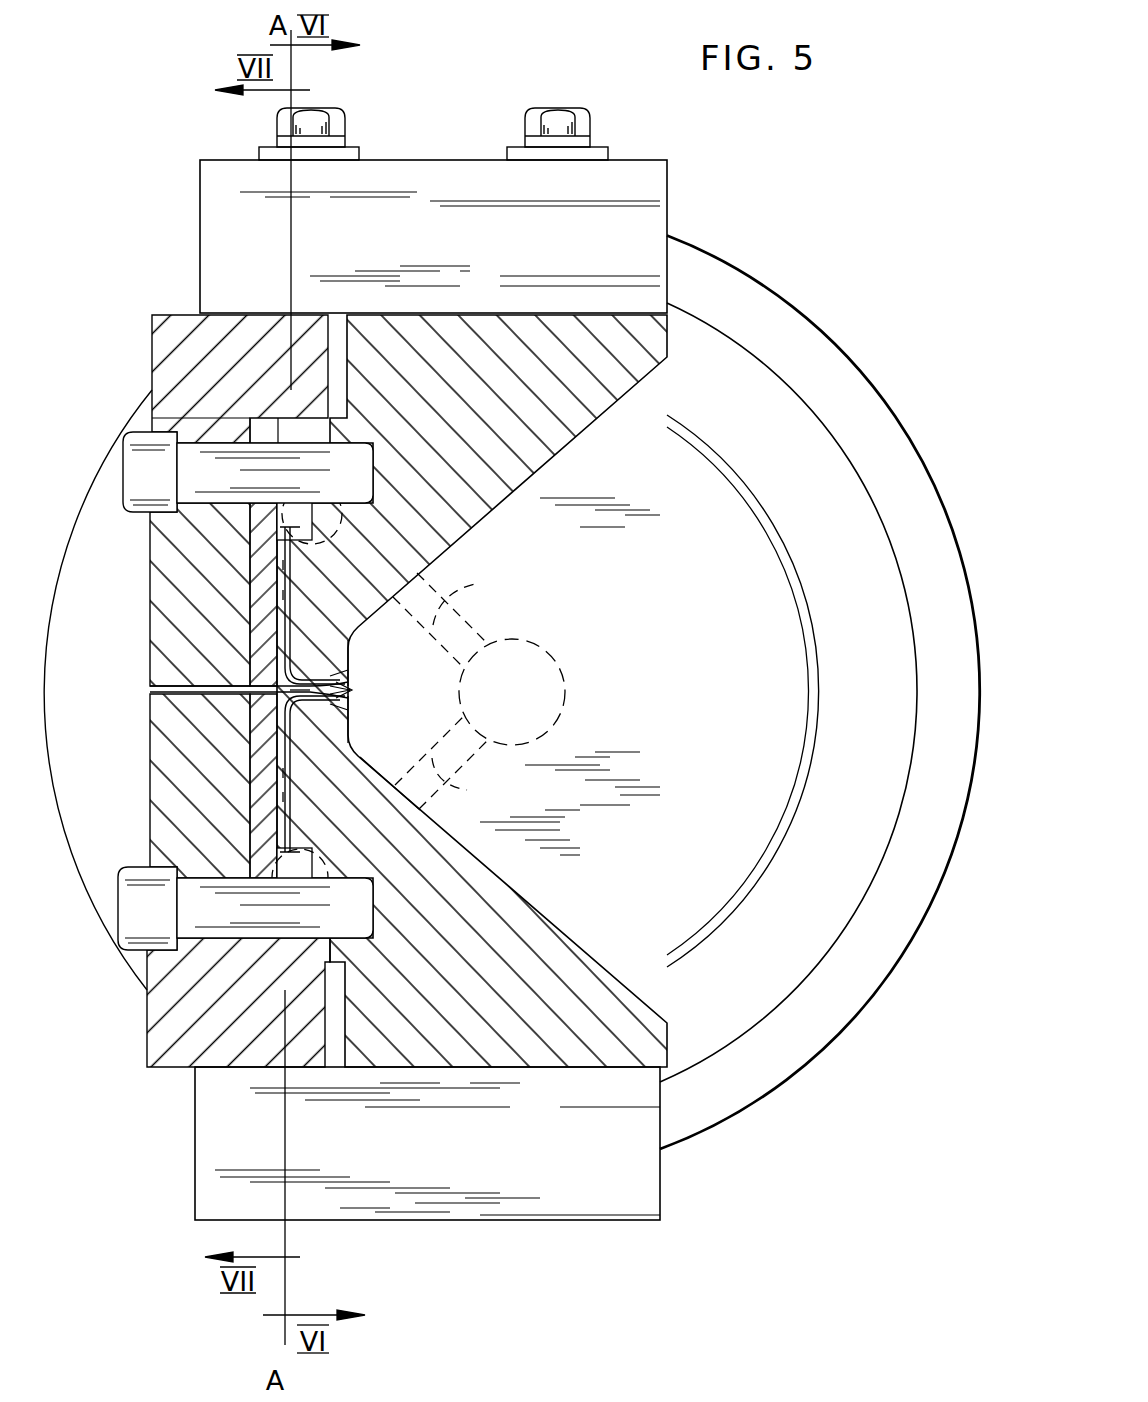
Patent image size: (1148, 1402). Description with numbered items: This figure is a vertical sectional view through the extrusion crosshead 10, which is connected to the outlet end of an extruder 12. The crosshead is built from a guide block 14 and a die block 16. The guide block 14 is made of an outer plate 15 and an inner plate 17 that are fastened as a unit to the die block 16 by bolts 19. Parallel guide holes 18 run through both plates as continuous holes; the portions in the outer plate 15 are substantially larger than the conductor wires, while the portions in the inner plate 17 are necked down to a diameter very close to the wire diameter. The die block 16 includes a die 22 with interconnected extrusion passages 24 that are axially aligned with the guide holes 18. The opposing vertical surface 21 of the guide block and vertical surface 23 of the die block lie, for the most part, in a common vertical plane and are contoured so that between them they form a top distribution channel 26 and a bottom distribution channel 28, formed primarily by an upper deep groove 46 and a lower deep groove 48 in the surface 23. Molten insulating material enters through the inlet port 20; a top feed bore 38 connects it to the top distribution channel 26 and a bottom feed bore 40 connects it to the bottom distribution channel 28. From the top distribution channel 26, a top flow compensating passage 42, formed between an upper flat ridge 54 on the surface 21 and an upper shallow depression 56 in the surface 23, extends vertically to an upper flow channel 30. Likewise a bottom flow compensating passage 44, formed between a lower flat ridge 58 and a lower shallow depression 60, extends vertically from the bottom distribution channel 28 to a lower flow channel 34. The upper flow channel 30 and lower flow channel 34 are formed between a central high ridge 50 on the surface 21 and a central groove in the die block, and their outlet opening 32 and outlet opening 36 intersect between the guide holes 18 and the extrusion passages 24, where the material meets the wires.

The extrusion crosshead 10 is at (143, 185).
The extruder 12 is at (775, 310).
The guide block 14 is at (160, 534).
The outer plate 15 is at (152, 395).
The die block 16 is at (655, 345).
The inner plate 17 is at (272, 426).
The guide holes 18 is at (147, 688).
The bolts 19 is at (140, 465).
The inlet port 20 is at (533, 673).
The vertical surface of guide block 21 is at (303, 438).
The die 22 is at (348, 665).
The vertical surface of die block 23 is at (257, 428).
The extrusion passages 24 is at (350, 697).
The top distribution channel 26 is at (293, 487).
The bottom distribution channel 28 is at (297, 883).
The upper flow channel 30 is at (287, 670).
The outlet opening of upper flow channel 32 is at (350, 684).
The lower flow channel 34 is at (287, 703).
The outlet opening of lower flow channel 36 is at (380, 772).
The top feed bore 38 is at (467, 600).
The bottom feed bore 40 is at (468, 792).
The top flow compensating passage 42 is at (288, 588).
The bottom flow compensating passage 44 is at (285, 820).
The upper deep groove 46 is at (366, 658).
The lower deep groove 48 is at (364, 721).
The central high ridge 50 is at (300, 694).
The upper flat ridge 54 is at (285, 565).
The upper shallow depression 56 is at (288, 595).
The lower flat ridge 58 is at (285, 797).
The lower shallow depression 60 is at (287, 773).